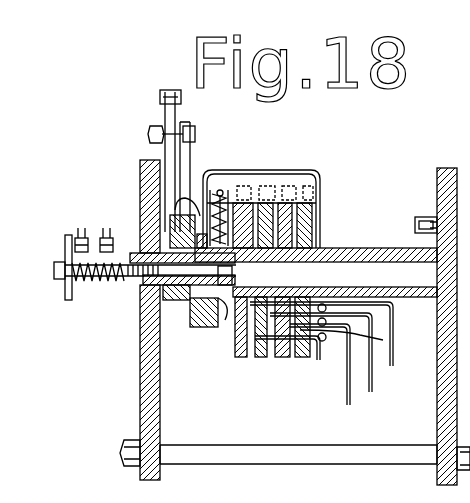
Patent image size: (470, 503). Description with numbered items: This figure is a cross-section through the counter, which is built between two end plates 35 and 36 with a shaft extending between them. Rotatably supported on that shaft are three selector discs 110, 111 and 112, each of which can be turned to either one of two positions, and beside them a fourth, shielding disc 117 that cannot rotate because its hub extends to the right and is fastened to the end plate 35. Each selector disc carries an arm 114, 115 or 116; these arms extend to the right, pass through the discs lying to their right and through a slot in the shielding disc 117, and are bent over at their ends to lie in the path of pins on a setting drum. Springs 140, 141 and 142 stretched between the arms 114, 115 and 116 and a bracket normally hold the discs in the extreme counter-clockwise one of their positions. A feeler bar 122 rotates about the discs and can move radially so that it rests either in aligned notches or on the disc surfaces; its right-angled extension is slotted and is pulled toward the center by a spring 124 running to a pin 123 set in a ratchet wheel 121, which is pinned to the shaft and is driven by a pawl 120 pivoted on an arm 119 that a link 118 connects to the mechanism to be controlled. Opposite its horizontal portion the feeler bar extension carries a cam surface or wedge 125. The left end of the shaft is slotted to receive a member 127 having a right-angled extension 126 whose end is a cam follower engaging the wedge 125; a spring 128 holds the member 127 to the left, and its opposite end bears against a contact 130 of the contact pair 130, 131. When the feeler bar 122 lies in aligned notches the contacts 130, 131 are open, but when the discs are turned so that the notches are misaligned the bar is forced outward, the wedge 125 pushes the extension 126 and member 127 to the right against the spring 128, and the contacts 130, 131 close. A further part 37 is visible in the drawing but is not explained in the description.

The end plate 35 is at (447, 170).
The end plate 36 is at (170, 166).
The base plate 37 is at (312, 465).
The selector disc 110 is at (244, 358).
The selector disc 111 is at (262, 358).
The selector disc 112 is at (282, 358).
The arm 114 is at (351, 404).
The arm 115 is at (373, 390).
The arm 116 is at (394, 367).
The shielding disc 117 is at (300, 358).
The link 118 is at (165, 102).
The arm 119 is at (178, 150).
The pawl 120 is at (180, 186).
The ratchet wheel 121 is at (165, 320).
The feeler bar 122 is at (298, 174).
The pin 123 is at (214, 195).
The spring 124 is at (224, 204).
The cam surface or wedge 125 is at (205, 320).
The right-angled extension 126 is at (65, 294).
The member 127 is at (127, 281).
The spring 128 is at (96, 282).
The contact 130 is at (80, 236).
The contact 131 is at (104, 236).
The spring 140 is at (330, 307).
The spring 141 is at (384, 340).
The spring 142 is at (318, 358).